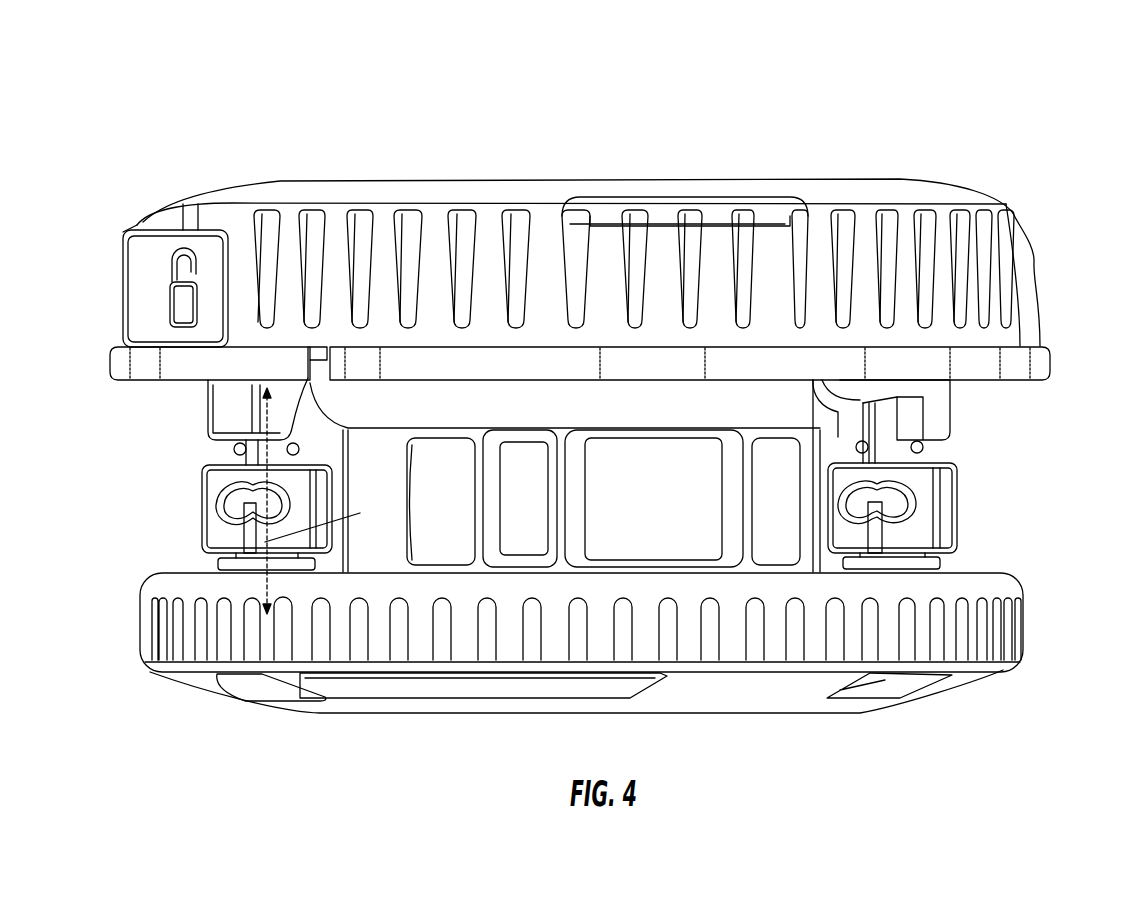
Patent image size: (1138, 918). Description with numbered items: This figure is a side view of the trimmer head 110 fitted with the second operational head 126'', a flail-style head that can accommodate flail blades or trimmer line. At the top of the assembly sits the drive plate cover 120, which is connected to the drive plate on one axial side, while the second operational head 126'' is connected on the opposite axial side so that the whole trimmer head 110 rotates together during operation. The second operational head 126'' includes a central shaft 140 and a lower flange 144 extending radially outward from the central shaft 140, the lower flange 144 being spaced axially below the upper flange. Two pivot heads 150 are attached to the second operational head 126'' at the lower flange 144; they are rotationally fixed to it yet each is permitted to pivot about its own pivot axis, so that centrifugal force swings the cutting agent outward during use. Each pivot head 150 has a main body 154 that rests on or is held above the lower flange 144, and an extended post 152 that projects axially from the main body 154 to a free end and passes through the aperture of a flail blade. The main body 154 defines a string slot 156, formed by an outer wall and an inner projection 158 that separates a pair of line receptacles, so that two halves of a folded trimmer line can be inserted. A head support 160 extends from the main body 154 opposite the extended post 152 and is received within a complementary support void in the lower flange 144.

The trimmer head 110 is at (981, 141).
The drive plate cover 120 is at (1014, 213).
The second operational head 126'' is at (983, 430).
The central shaft 140 is at (350, 413).
The lower flange 144 is at (158, 625).
The pivot head 150 is at (184, 511).
The extended post 152 is at (888, 432).
The main body 154 is at (947, 503).
The string slot 156 is at (857, 507).
The inner projection 158 is at (890, 513).
The head support 160 is at (240, 556).